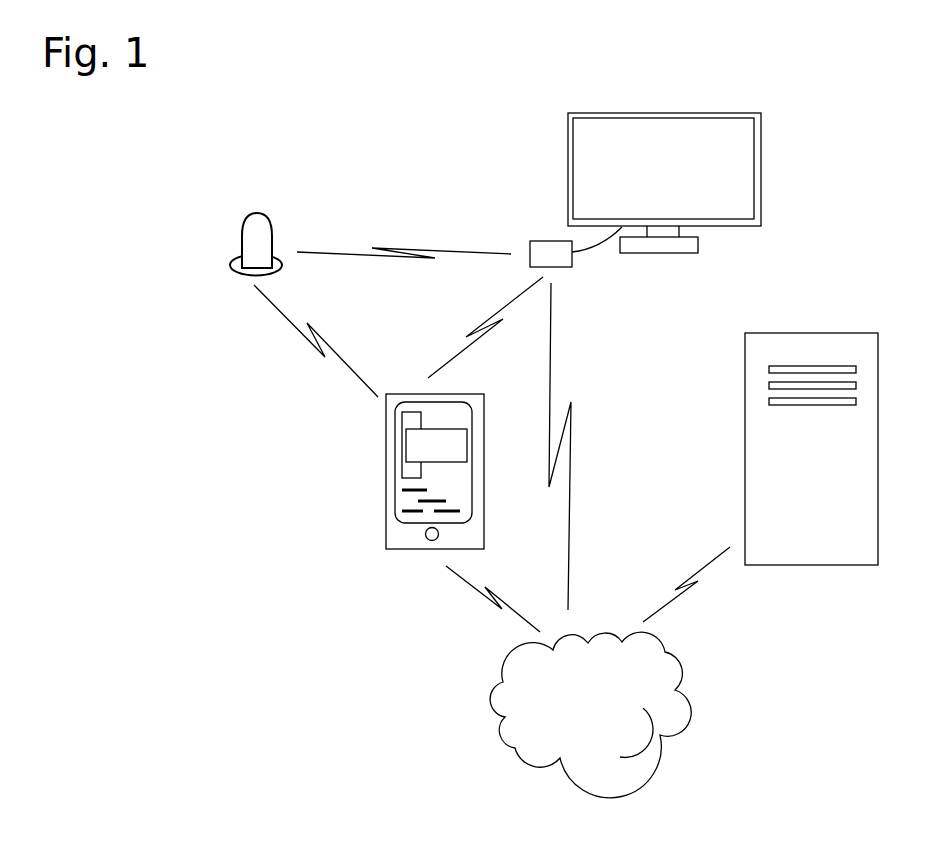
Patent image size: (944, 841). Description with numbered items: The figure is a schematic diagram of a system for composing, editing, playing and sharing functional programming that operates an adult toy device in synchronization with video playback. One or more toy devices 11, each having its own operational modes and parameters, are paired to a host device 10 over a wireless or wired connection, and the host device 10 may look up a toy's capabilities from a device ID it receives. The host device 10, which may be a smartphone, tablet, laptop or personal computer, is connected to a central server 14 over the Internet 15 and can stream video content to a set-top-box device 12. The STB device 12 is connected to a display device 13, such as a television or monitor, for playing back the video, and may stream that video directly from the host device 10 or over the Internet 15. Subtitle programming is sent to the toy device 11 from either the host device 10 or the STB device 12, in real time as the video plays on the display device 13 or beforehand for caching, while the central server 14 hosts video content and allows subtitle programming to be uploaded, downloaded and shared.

The host device 10 is at (435, 471).
The toy device 11 is at (256, 244).
The set-top-box (STB) device 12 is at (576, 247).
The display device 13 is at (664, 183).
The central server 14 is at (811, 449).
The Internet 15 is at (590, 715).